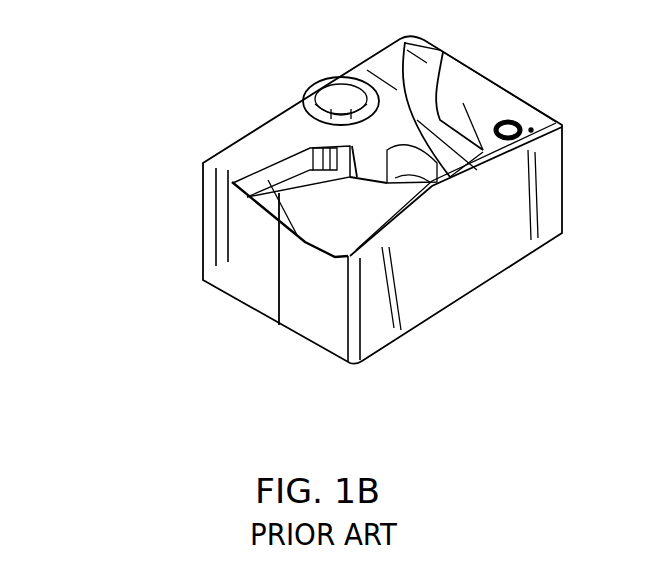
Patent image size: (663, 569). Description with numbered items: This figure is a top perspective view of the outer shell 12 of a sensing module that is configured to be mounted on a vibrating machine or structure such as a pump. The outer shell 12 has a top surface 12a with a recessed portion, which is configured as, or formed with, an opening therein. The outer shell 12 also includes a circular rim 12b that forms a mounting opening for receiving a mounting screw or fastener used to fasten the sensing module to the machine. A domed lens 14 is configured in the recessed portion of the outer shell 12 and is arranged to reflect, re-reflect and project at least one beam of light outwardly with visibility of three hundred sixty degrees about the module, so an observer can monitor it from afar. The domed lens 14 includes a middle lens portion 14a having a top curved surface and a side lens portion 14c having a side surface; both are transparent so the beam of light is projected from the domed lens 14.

The outer shell 12 is at (240, 222).
The top surface 12a is at (470, 103).
The circular rim 12b is at (320, 97).
The domed lens 14 is at (375, 146).
The middle lens portion 14a is at (415, 130).
The side lens portion 14c is at (364, 178).